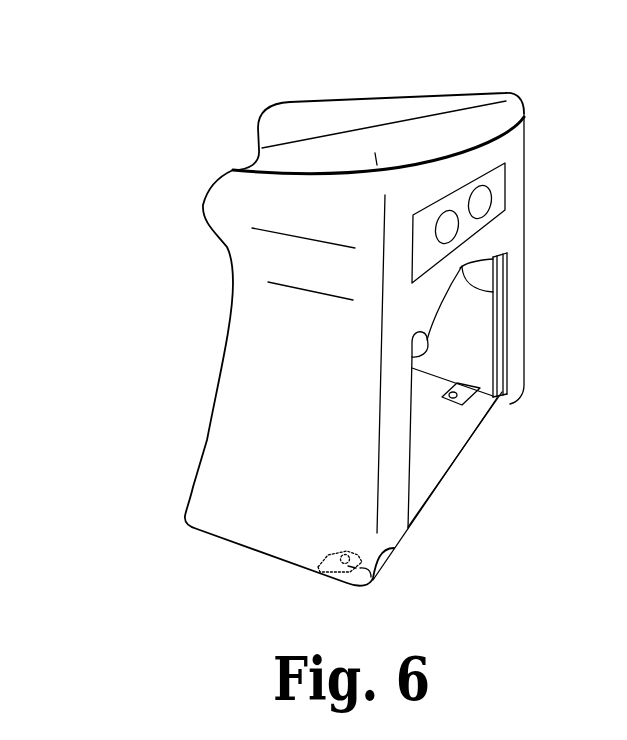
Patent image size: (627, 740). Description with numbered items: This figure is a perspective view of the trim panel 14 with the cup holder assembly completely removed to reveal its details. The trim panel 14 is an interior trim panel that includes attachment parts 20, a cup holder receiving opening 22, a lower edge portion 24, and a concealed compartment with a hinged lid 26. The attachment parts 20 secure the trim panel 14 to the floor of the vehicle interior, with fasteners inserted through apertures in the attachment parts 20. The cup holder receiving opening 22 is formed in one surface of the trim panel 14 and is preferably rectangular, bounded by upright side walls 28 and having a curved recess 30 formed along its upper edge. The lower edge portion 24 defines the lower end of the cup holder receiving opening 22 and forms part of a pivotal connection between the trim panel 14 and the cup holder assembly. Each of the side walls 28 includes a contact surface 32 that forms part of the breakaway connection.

The trim panel 14 is at (545, 172).
The attachment parts 20 is at (465, 392).
The cup holder receiving opening 22 is at (412, 357).
The lower edge portion 24 is at (460, 445).
The hinged lid 26 is at (483, 108).
The side walls 28 is at (507, 337).
The curved recess 30 is at (497, 317).
The contact surface 32 is at (505, 318).